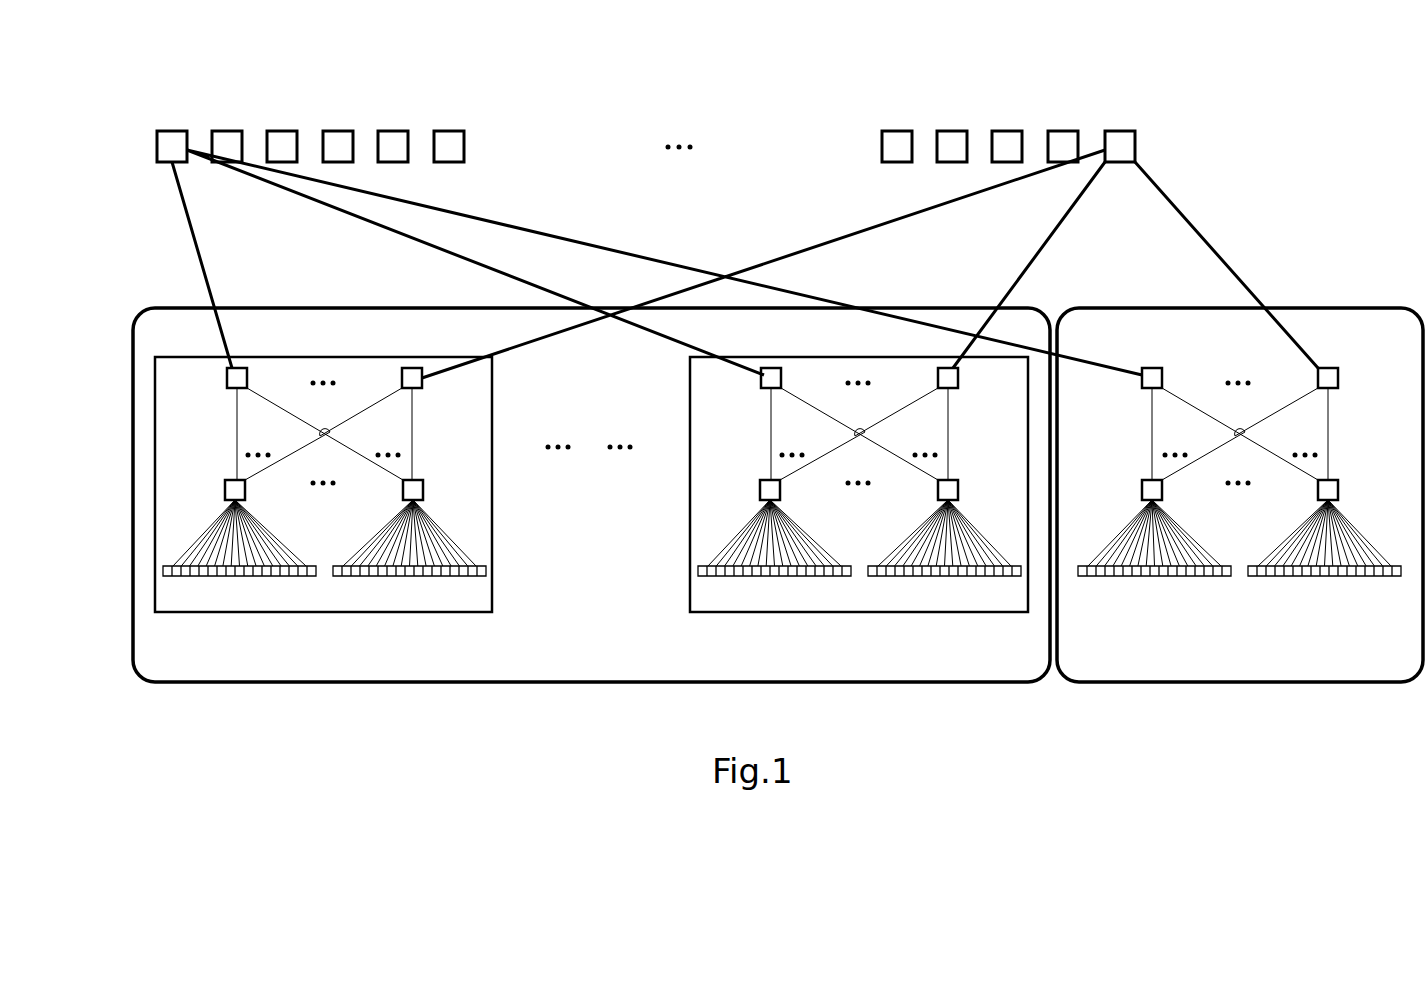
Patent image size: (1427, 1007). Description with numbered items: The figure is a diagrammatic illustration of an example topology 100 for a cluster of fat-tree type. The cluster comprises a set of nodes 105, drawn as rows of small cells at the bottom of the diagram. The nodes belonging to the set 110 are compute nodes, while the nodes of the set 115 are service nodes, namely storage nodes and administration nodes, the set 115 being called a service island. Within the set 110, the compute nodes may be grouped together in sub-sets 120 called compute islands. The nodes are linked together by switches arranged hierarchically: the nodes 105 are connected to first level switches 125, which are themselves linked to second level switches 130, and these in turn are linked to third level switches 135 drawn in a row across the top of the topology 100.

The topology 100 is at (1272, 99).
The nodes 105 is at (235, 577).
The set of compute nodes 110 is at (360, 683).
The set of service nodes 115 is at (1240, 683).
The compute island 120 is at (888, 613).
The first level switch 125 is at (958, 488).
The second level switch 130 is at (958, 376).
The third level switch 135 is at (1118, 130).